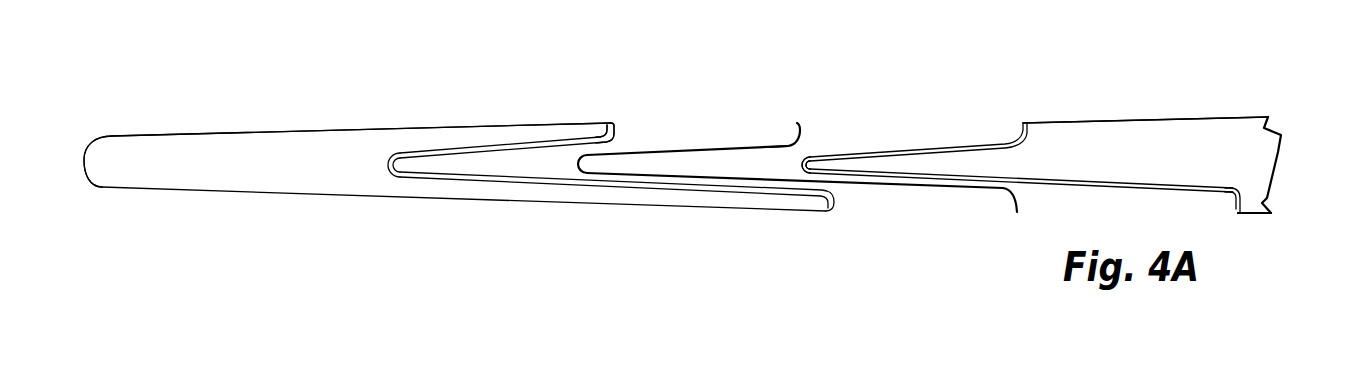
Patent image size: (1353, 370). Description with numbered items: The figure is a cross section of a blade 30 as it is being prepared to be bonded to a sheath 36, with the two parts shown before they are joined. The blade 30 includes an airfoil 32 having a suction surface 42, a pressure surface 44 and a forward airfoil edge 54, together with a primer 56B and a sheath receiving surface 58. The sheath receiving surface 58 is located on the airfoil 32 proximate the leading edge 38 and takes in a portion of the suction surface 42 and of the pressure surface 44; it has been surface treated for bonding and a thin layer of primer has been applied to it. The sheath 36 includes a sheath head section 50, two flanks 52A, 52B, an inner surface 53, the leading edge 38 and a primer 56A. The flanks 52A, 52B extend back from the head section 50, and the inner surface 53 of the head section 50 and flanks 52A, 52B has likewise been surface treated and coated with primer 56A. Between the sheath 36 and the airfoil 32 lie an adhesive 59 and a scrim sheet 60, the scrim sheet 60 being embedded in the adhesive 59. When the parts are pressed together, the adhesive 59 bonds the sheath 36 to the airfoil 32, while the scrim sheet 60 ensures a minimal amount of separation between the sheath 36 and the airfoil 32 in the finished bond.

The blade 30 is at (1290, 126).
The airfoil 32 is at (1203, 50).
The sheath 36 is at (187, 118).
The leading edge 38 is at (90, 184).
The suction surface 42 is at (1137, 122).
The pressure surface 44 is at (1258, 213).
The sheath head section 50 is at (192, 158).
The flank 52A is at (438, 135).
The flank 52B is at (430, 187).
The inner surface 53 is at (388, 162).
The forward airfoil edge 54 is at (824, 163).
The primer 56A is at (620, 136).
The primer 56B is at (968, 145).
The sheath receiving surface 58 is at (813, 157).
The adhesive 59 is at (742, 147).
The scrim sheet 60 is at (777, 146).